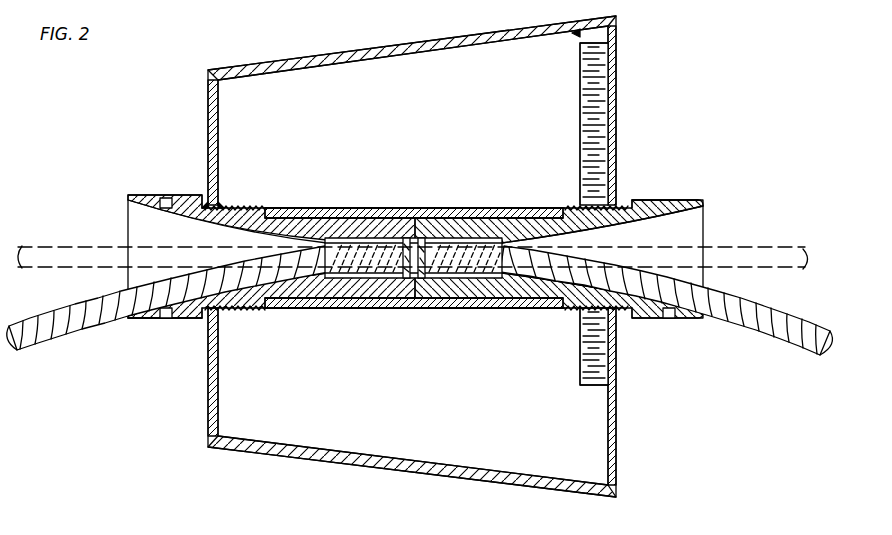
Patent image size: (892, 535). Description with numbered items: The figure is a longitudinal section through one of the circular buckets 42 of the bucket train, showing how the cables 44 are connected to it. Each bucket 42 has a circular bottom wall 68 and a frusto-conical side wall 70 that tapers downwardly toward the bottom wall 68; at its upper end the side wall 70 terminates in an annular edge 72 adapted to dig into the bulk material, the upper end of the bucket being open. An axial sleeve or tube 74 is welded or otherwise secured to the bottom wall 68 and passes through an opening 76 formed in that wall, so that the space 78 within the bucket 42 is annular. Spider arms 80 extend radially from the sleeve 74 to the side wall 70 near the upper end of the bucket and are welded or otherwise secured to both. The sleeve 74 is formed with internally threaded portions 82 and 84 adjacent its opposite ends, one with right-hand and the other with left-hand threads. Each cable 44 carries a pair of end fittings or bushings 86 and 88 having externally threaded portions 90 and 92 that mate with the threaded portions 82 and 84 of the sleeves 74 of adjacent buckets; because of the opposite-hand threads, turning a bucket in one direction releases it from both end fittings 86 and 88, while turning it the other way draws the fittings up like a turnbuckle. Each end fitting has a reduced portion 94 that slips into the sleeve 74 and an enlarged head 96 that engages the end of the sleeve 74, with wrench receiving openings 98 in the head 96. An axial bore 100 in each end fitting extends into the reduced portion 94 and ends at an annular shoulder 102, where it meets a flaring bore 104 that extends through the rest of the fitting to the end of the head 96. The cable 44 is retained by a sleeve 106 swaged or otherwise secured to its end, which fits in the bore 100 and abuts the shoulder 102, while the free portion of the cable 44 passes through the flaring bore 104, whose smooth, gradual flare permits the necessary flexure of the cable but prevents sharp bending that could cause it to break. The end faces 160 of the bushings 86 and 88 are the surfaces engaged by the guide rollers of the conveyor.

The bucket 42 is at (289, 46).
The cable 44 is at (62, 340).
The bottom wall 68 is at (210, 372).
The side wall 70 is at (362, 60).
The annular edge 72 is at (616, 493).
The axial sleeve 74 is at (388, 207).
The opening 76 is at (258, 205).
The space 78 is at (560, 427).
The spider arms 80 is at (595, 110).
The internally threaded portion 82 is at (255, 303).
The internally threaded portion 84 is at (553, 292).
The end fitting 86 is at (128, 195).
The end fitting 88 is at (708, 192).
The externally threaded portion 90 is at (252, 310).
The externally threaded portion 92 is at (625, 312).
The reduced portion 94 is at (353, 292).
The enlarged head 96 is at (692, 200).
The wrench receiving openings 98 is at (170, 197).
The axial bore 100 is at (478, 240).
The annular shoulder 102 is at (490, 240).
The flaring bore 104 is at (128, 213).
The sleeve 106 is at (433, 242).
The end faces 160 is at (128, 272).